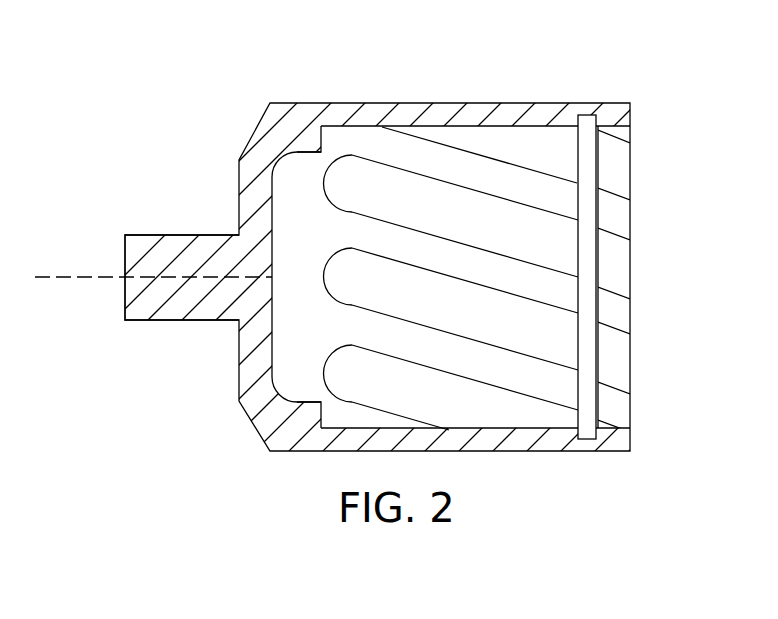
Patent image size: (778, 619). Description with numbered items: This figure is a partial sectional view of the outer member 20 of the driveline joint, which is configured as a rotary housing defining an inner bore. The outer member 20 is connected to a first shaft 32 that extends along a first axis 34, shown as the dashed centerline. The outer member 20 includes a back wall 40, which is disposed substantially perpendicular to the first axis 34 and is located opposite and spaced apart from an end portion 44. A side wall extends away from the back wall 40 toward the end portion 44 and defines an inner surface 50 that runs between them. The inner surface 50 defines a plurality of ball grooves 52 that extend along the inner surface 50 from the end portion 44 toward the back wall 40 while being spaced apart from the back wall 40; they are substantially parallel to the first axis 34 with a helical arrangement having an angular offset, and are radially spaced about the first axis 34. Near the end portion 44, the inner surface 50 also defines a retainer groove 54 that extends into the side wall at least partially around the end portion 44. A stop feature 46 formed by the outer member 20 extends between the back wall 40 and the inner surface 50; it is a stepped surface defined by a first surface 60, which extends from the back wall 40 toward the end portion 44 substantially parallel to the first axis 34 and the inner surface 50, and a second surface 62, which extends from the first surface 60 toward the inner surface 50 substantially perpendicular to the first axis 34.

The outer member 20 is at (299, 141).
The first shaft 32 is at (157, 245).
The first axis 34 is at (75, 290).
The back wall 40 is at (273, 173).
The end portion 44 is at (620, 112).
The stop feature 46 is at (297, 131).
The inner surface 50 is at (372, 124).
The plurality of ball grooves 52 is at (428, 203).
The retainer groove 54 is at (577, 113).
The first surface 60 is at (312, 153).
The second surface 62 is at (322, 137).